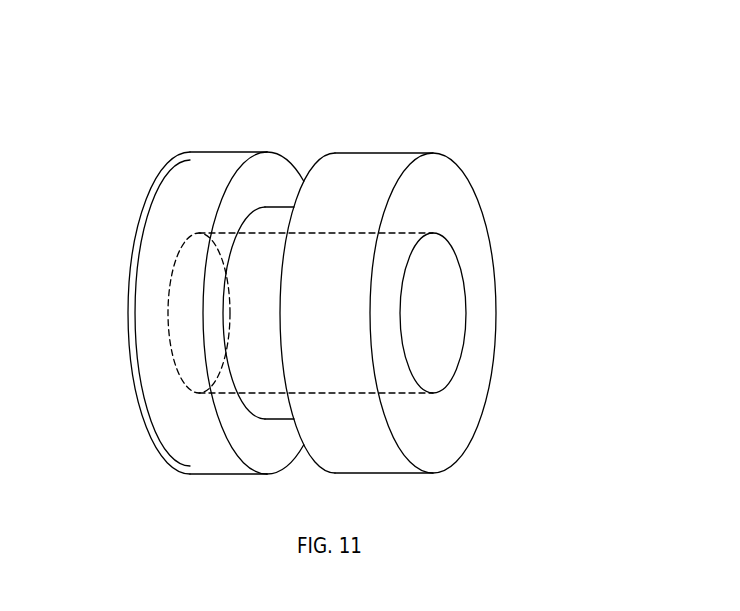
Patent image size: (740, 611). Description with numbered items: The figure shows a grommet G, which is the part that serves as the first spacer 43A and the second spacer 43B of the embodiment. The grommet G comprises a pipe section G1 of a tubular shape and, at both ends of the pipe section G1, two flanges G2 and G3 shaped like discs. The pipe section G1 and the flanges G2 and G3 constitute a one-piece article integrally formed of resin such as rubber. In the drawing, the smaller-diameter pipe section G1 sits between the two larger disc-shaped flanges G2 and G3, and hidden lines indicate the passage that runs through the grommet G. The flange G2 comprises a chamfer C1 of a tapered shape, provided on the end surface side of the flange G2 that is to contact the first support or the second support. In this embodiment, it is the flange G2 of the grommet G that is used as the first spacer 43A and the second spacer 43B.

The grommet G is at (467, 87).
The first spacer 43A is at (271, 268).
The second spacer 43B is at (271, 268).
The pipe section G1 is at (272, 215).
The flange G2 is at (210, 160).
The flange G3 is at (375, 157).
The chamfer C1 is at (143, 390).